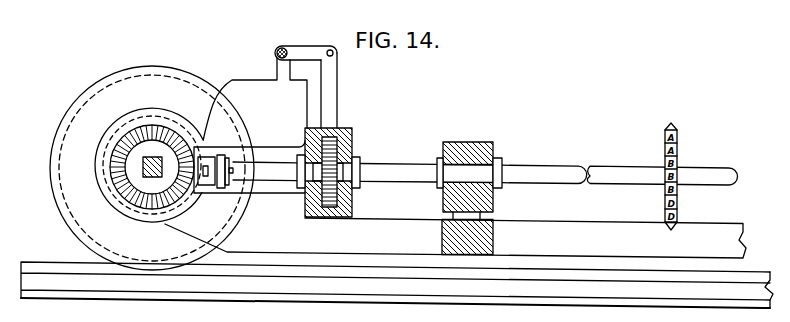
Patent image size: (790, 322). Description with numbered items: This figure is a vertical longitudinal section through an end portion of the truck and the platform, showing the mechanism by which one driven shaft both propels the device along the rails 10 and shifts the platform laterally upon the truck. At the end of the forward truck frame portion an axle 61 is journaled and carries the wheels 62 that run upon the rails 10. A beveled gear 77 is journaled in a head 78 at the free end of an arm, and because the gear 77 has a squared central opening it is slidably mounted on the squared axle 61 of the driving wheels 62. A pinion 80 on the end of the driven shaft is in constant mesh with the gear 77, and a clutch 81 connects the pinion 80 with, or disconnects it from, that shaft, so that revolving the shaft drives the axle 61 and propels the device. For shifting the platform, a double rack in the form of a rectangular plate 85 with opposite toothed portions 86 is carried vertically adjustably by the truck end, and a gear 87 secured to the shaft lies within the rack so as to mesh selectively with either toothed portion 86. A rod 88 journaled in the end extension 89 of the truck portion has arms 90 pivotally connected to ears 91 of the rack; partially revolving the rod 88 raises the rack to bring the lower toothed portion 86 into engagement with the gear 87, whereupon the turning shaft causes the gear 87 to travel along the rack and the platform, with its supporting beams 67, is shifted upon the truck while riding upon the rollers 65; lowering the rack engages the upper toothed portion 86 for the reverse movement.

The rails 10 is at (397, 285).
The axle 61 is at (143, 173).
The wheels 62 is at (398, 168).
The rollers 65 is at (480, 217).
The supporting beams 67 is at (457, 143).
The beveled gear 77 is at (158, 126).
The head 78 is at (108, 132).
The pinion 80 is at (197, 147).
The clutch 81 is at (210, 168).
The rectangular plate 85 is at (330, 127).
The toothed portions 86 is at (352, 147).
The gear 87 is at (306, 176).
The rod 88 is at (275, 53).
The end extension 89 is at (255, 99).
The arms 90 is at (313, 40).
The ears 91 is at (328, 98).